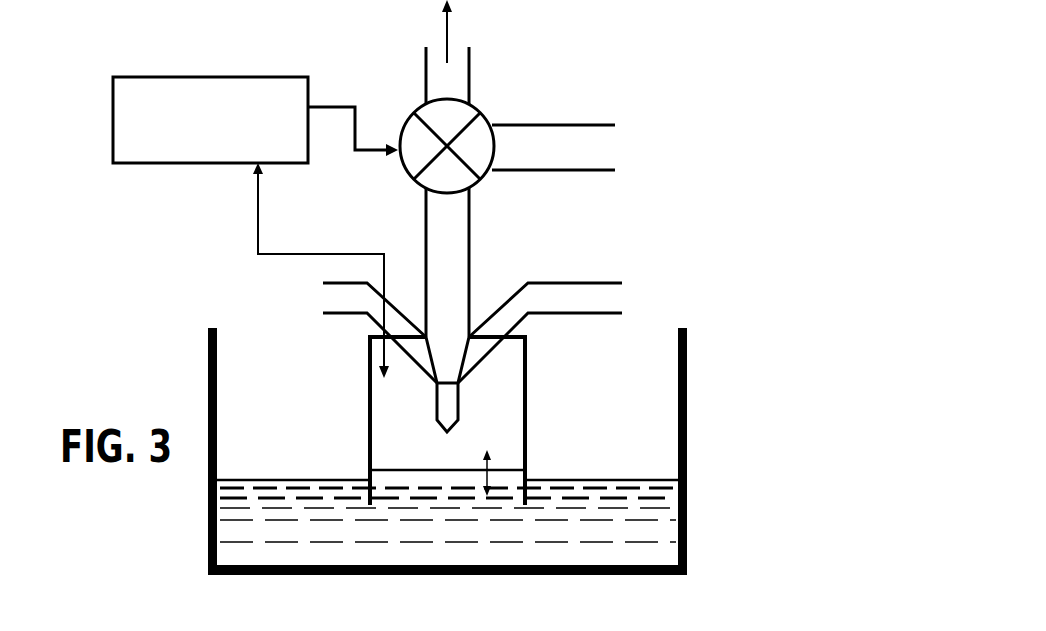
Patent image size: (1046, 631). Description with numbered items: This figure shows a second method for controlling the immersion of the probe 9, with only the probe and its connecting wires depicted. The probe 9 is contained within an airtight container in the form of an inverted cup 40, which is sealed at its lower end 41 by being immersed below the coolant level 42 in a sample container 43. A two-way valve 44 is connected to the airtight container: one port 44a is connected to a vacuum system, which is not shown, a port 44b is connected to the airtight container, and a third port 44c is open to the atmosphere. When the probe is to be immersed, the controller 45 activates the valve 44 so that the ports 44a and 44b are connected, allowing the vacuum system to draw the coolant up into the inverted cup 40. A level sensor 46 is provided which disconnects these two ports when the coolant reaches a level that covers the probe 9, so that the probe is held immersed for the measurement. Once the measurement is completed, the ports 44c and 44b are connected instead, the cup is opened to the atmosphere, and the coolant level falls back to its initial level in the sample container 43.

The probe 9 is at (462, 405).
The inverted cup 40 is at (528, 432).
The lower end 41 is at (373, 500).
The coolant level 42 is at (295, 480).
The sample container 43 is at (688, 498).
The two-way valve 44 is at (488, 116).
The port 44a is at (445, 90).
The port 44b is at (438, 200).
The third port 44c is at (513, 143).
The controller 45 is at (230, 133).
The level sensor 46 is at (380, 379).